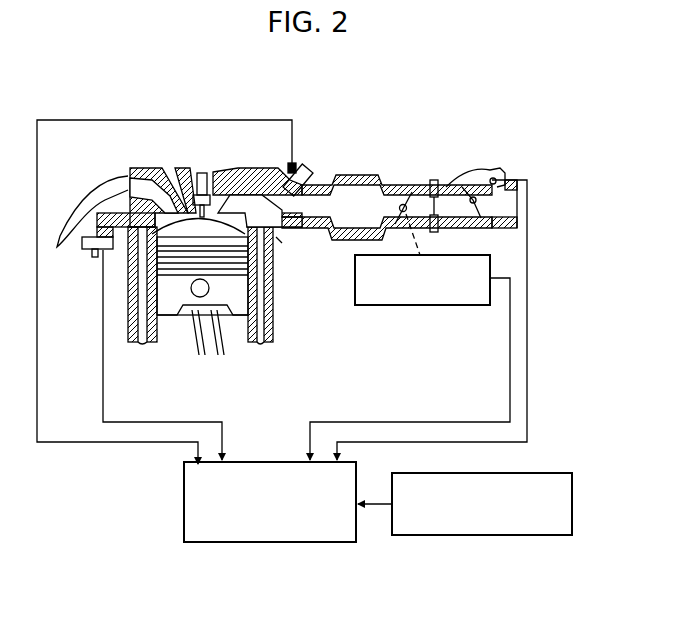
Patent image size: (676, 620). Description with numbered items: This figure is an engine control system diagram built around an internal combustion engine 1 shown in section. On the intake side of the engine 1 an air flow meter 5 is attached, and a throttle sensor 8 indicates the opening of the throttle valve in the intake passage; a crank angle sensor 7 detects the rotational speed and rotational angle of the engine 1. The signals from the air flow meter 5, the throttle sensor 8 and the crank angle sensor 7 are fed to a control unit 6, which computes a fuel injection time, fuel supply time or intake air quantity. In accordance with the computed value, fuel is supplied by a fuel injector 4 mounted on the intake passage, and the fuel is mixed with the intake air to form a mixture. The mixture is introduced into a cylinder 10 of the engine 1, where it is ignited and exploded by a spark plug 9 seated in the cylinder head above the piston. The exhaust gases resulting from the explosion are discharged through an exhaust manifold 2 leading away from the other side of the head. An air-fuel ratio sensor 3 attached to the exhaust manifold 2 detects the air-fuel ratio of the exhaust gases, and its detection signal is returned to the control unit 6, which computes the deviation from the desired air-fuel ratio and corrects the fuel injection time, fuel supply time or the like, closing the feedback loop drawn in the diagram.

The internal combustion engine 1 is at (273, 323).
The exhaust manifold 2 is at (82, 192).
The air-fuel ratio sensor 3 is at (80, 258).
The fuel injector 4 is at (308, 166).
The air flow meter 5 is at (463, 178).
The control unit 6 is at (262, 542).
The crank angle sensor 7 is at (485, 535).
The throttle sensor 8 is at (420, 305).
The spark plug 9 is at (205, 176).
The cylinder 10 is at (275, 238).